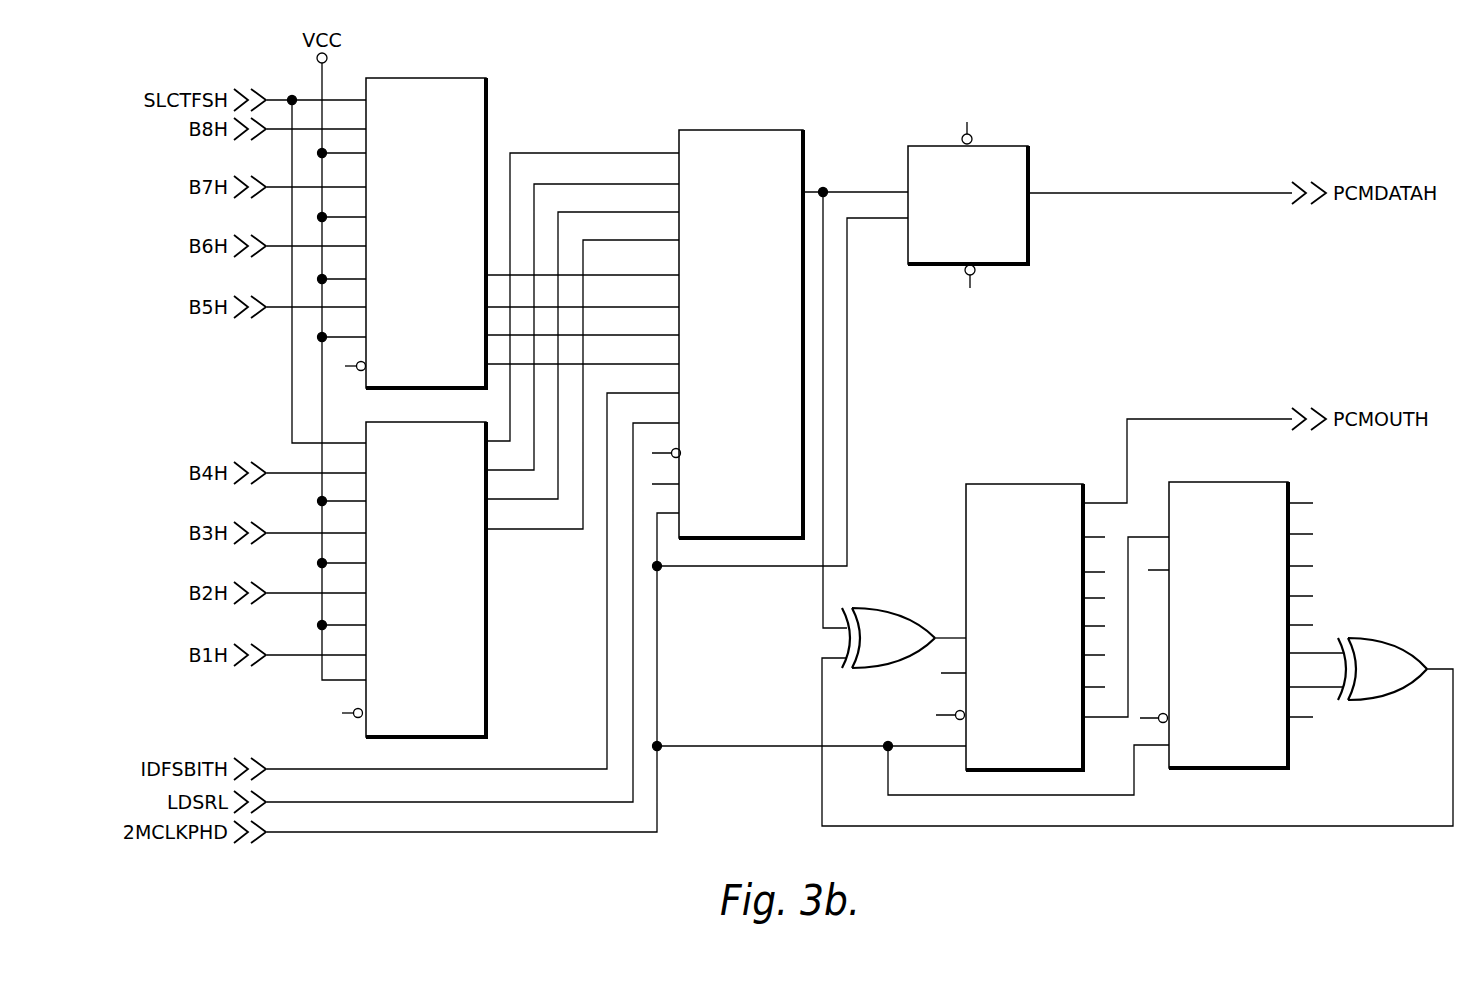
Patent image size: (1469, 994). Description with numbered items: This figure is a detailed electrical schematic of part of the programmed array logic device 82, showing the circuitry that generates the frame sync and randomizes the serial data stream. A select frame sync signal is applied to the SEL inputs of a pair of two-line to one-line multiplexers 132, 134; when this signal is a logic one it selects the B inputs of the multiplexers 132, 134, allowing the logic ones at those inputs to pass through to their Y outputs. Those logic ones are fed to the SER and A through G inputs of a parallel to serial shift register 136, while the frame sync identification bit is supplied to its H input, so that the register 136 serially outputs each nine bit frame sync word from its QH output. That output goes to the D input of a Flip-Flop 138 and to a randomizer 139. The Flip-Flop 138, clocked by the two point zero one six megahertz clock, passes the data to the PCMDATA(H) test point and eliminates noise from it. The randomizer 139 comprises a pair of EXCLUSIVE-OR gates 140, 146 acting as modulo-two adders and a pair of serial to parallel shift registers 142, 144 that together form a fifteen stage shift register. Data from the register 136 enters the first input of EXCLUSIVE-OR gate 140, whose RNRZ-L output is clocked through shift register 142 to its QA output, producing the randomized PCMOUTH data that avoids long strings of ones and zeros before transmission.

The programmed array logic device 82 is at (1136, 111).
The 2-line to 1-line multiplexer 132 is at (488, 104).
The 2-line to 1-line multiplexer 134 is at (488, 706).
The parallel to serial shift register 136 is at (718, 130).
The Flip-Flop 138 is at (1030, 164).
The randomizer 139 is at (1089, 438).
The EXCLUSIVE-OR gate 140 is at (876, 605).
The serial to parallel shift register 142 is at (1004, 482).
The serial to parallel shift register 144 is at (1216, 480).
The EXCLUSIVE-OR gate 146 is at (1372, 636).